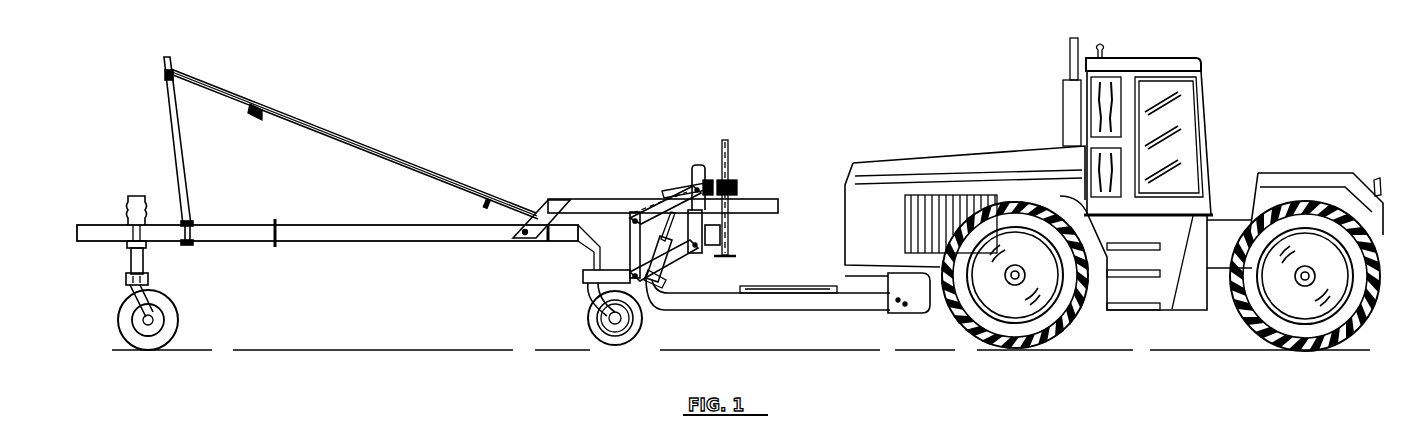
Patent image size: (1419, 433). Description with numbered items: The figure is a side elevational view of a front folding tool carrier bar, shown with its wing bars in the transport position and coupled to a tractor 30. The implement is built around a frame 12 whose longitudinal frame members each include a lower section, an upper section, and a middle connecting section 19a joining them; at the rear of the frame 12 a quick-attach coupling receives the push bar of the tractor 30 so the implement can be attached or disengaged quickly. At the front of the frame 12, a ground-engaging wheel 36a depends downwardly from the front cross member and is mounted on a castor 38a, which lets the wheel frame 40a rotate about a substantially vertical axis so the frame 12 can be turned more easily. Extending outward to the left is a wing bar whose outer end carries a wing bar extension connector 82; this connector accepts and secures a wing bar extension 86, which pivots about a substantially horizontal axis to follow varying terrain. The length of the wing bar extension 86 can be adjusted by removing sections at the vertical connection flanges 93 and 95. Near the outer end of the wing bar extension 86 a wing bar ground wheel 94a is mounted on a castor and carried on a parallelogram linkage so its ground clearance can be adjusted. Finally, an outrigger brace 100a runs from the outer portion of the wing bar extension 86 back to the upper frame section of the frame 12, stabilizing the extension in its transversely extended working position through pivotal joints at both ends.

The frame 12 is at (834, 324).
The middle connecting section 19a is at (652, 298).
The tractor 30 is at (1170, 275).
The ground-engaging wheel 36a is at (643, 335).
The castor 38a is at (585, 297).
The wheel frame 40a is at (600, 333).
The wing bar extension connector 82 is at (538, 212).
The wing bar extension 86 is at (325, 243).
The vertical connection flange 93 is at (275, 243).
The wing bar ground wheel 94a is at (153, 352).
The vertical connection flange 95 is at (548, 241).
The outrigger brace 100a is at (372, 151).